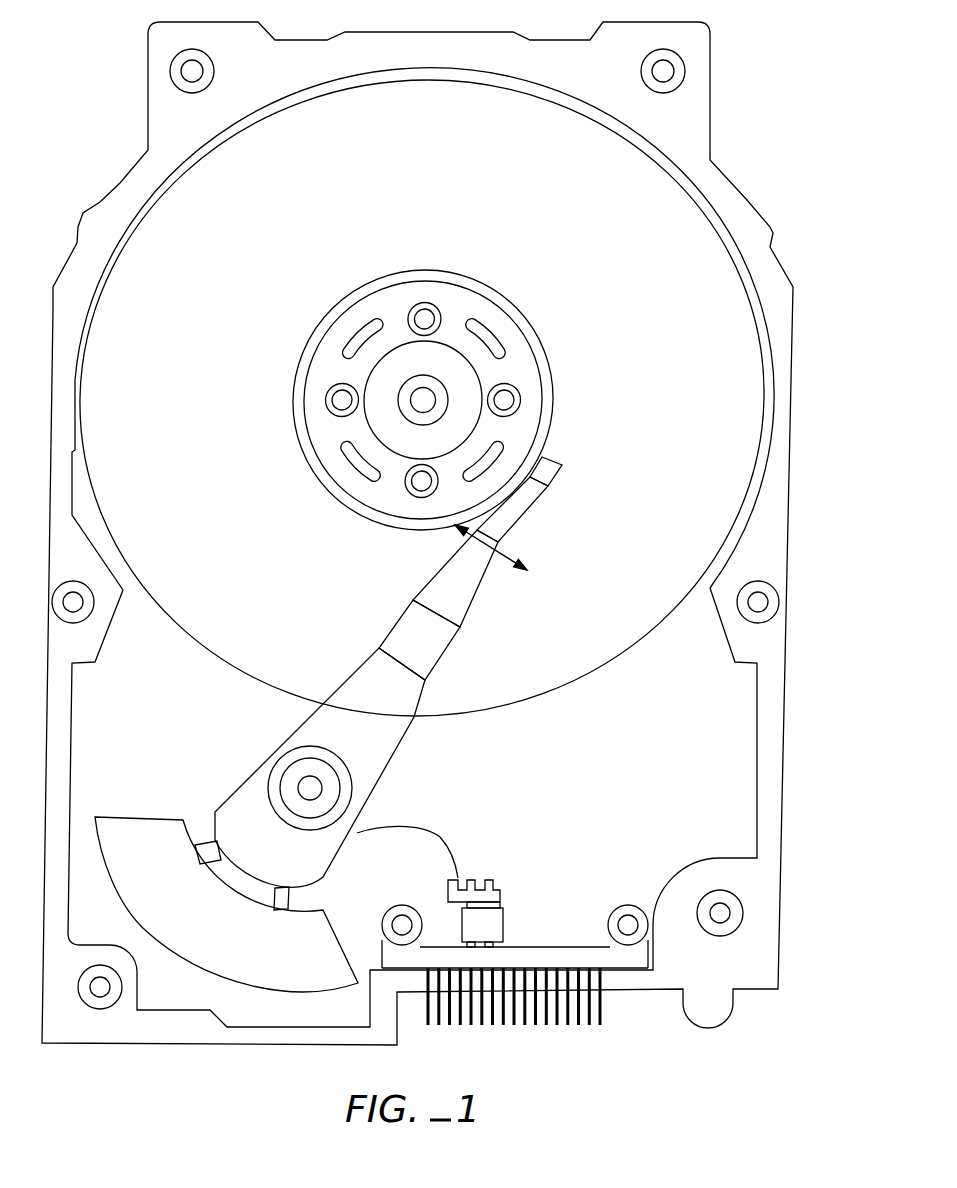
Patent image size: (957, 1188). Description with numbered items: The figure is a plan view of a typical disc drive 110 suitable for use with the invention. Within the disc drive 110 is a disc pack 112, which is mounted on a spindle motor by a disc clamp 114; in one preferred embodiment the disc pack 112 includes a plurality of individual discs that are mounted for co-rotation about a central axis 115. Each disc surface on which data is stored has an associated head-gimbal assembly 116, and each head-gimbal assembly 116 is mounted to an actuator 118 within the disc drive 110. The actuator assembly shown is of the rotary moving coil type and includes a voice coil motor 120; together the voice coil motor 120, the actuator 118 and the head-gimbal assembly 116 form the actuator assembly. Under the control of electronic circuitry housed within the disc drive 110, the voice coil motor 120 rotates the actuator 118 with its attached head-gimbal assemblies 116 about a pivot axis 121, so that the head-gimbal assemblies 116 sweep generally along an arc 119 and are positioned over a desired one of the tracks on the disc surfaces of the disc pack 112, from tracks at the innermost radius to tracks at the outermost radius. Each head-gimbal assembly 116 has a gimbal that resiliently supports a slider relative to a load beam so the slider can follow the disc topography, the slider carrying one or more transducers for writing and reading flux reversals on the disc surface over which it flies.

The disc drive 110 is at (750, 62).
The disc pack 112 is at (457, 141).
The disc clamp 114 is at (347, 297).
The central axis 115 is at (425, 396).
The head-gimbal assembly 116 is at (563, 455).
The actuator 118 is at (450, 680).
The arc 119 is at (525, 513).
The voice coil motor 120 is at (160, 817).
The pivot axis 121 is at (308, 786).